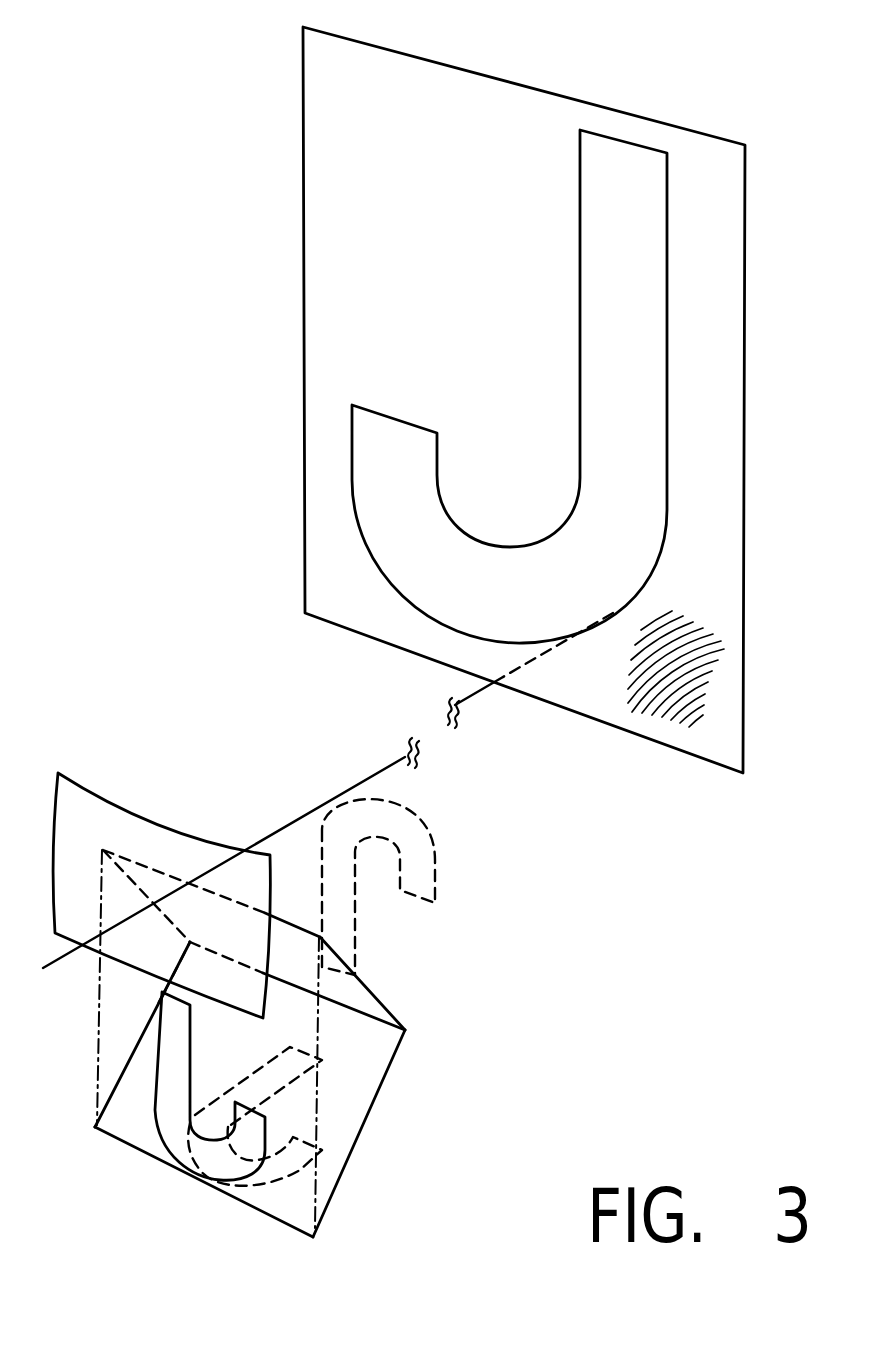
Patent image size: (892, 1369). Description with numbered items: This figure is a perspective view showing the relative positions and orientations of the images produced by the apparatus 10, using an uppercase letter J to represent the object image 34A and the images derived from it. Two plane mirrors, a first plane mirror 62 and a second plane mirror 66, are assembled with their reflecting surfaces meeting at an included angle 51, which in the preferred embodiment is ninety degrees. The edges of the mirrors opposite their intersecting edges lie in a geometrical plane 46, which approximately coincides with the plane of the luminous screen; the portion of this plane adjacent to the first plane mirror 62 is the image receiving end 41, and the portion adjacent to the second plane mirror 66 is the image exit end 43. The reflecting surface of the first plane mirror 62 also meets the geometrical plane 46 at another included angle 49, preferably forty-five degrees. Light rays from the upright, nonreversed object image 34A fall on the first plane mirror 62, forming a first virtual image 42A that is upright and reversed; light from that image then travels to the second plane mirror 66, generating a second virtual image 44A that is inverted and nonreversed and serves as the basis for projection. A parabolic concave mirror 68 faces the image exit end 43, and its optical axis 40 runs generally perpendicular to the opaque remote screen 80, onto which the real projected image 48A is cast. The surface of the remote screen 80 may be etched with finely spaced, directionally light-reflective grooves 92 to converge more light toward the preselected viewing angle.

The apparatus 10 is at (462, 1073).
The object image 34A is at (152, 1093).
The optical axis 40 is at (343, 790).
The image receiving end 41 is at (317, 1178).
The first virtual image 42A is at (228, 1091).
The image exit end 43 is at (318, 996).
The second virtual image 44A is at (430, 843).
The geometrical plane 46 is at (98, 990).
The real projected image 48A is at (655, 543).
The included angle 49 is at (330, 1172).
The included angle 51 is at (388, 1076).
The first plane mirror 62 is at (370, 1118).
The second plane mirror 66 is at (374, 993).
The parabolic concave mirror 68 is at (140, 811).
The remote screen 80 is at (677, 752).
The light-reflective grooves 92 is at (643, 683).